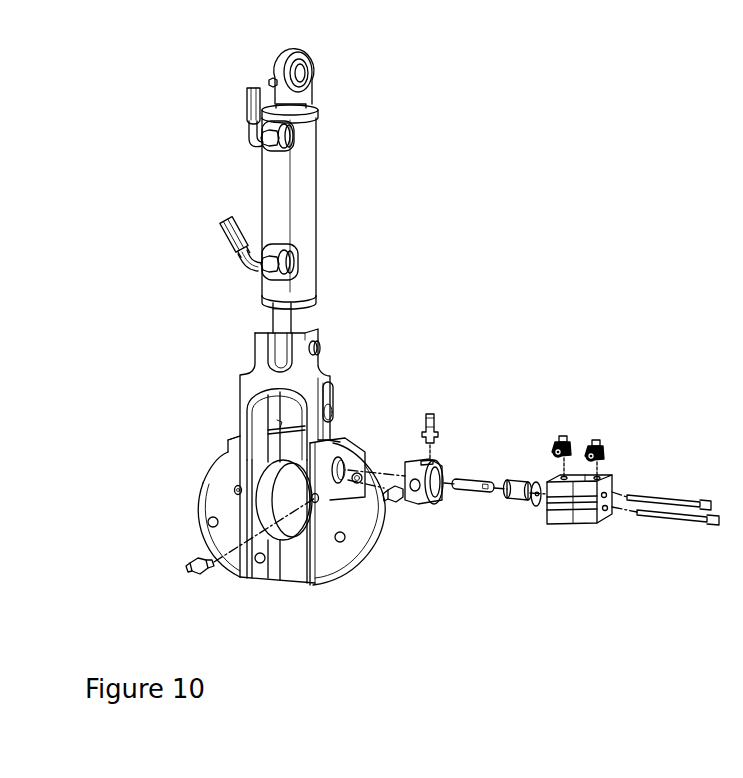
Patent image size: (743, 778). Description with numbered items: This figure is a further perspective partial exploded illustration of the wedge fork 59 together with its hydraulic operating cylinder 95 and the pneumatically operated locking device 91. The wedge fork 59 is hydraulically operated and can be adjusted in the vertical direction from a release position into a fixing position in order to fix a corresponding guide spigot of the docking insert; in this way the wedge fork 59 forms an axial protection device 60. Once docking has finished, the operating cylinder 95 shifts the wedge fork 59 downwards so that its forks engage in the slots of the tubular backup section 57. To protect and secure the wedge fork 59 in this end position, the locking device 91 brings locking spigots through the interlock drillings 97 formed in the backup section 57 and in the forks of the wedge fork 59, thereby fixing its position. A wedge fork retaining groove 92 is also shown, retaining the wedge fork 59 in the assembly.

The axial protection device 60 is at (358, 224).
The operating cylinder 95 is at (305, 150).
The wedge fork 59 is at (247, 388).
The interlock drilling 97 is at (336, 381).
The tubular backup section 57 is at (342, 443).
The locking device 91 is at (575, 437).
The wedge fork retaining groove 92 is at (250, 562).